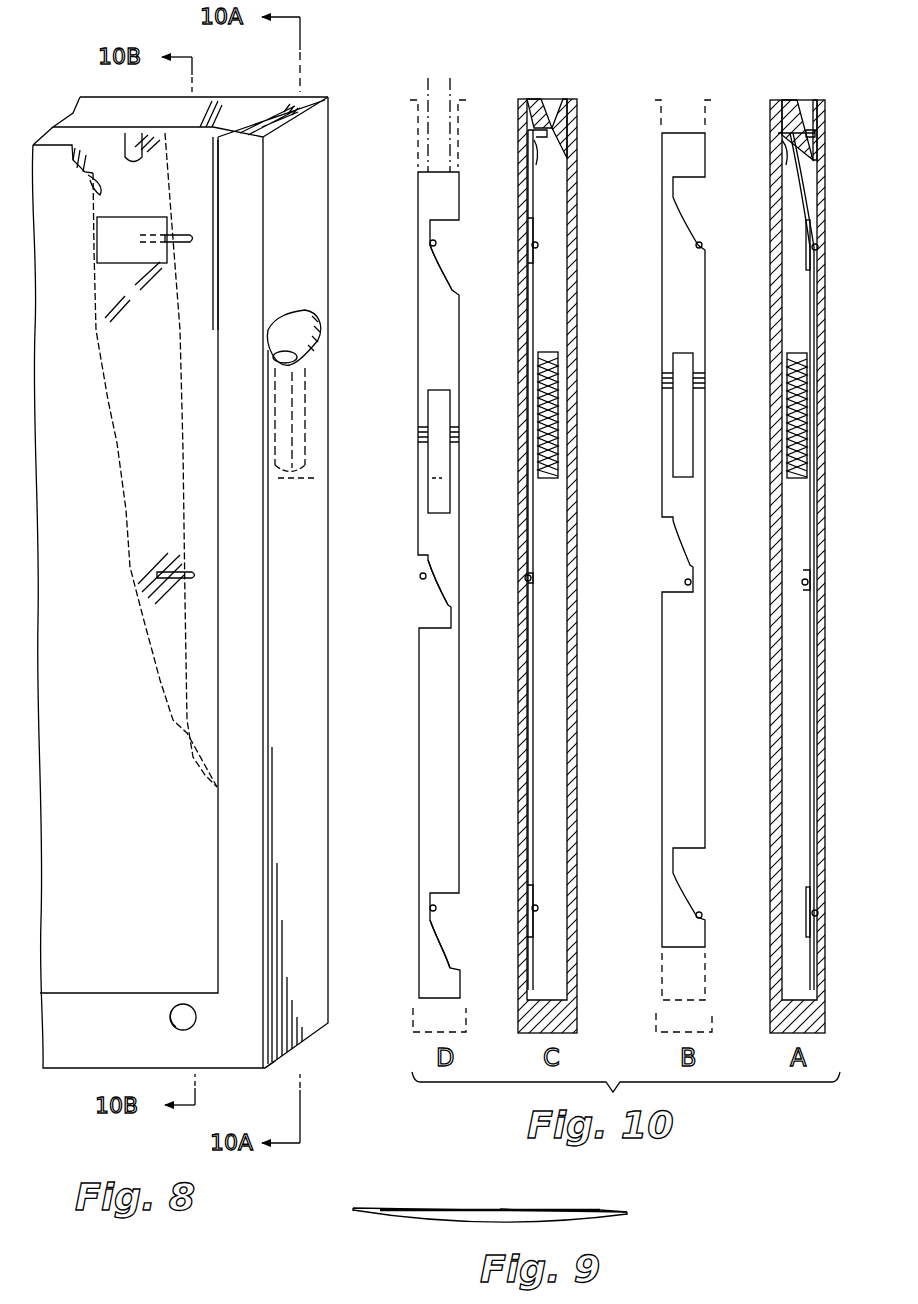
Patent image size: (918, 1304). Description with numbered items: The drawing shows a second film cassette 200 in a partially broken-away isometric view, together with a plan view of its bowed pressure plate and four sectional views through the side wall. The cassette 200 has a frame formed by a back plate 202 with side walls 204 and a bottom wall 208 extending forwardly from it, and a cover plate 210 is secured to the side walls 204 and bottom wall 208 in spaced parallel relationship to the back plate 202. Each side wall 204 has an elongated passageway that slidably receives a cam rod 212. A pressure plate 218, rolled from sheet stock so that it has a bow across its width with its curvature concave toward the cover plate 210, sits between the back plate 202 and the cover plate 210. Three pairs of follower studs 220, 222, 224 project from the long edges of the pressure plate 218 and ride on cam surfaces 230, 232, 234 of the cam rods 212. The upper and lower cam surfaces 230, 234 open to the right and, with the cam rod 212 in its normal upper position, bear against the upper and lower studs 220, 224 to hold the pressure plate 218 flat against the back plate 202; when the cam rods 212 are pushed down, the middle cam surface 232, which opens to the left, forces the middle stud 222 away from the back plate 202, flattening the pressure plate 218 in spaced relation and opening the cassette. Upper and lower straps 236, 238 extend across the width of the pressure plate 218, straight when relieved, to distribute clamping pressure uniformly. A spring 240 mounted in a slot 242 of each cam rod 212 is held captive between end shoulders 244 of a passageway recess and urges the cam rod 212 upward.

In FIG. 8, the cassette 200 is at (366, 56).
In FIG. 8, the back plate 202 is at (213, 97).
In FIG. 10, the back plate 202 is at (830, 690).
In FIG. 8, the side walls 204 is at (320, 160).
In FIG. 8, the bottom wall 208 is at (322, 1033).
In FIG. 8, the cover plate 210 is at (137, 852).
In FIG. 10, the cam rods 212 is at (659, 676).
In FIG. 8, the pressure plate 218 is at (160, 402).
In FIG. 10, the pressure plate 218 is at (534, 320).
In FIG. 9, the pressure plate 218 is at (440, 1217).
In FIG. 8, the upper follower studs 220 is at (180, 238).
In FIG. 10, the upper follower studs 220 is at (437, 243).
In FIG. 9, the upper follower studs 220 is at (625, 1210).
In FIG. 10, the middle follower studs 222 is at (421, 575).
In FIG. 10, the lower follower studs 224 is at (437, 910).
In FIG. 10, the upper cam surface 230 is at (443, 275).
In FIG. 10, the middle cam surface 232 is at (436, 597).
In FIG. 10, the lower cam surface 234 is at (447, 943).
In FIG. 8, the upper strap 236 is at (110, 219).
In FIG. 10, the upper strap 236 is at (806, 237).
In FIG. 9, the upper strap 236 is at (512, 1210).
In FIG. 10, the lower strap 238 is at (806, 900).
In FIG. 8, the spring 240 is at (308, 320).
In FIG. 10, the spring 240 is at (556, 405).
In FIG. 10, the slot 242 is at (445, 402).
In FIG. 8, the end shoulders 244 is at (316, 477).